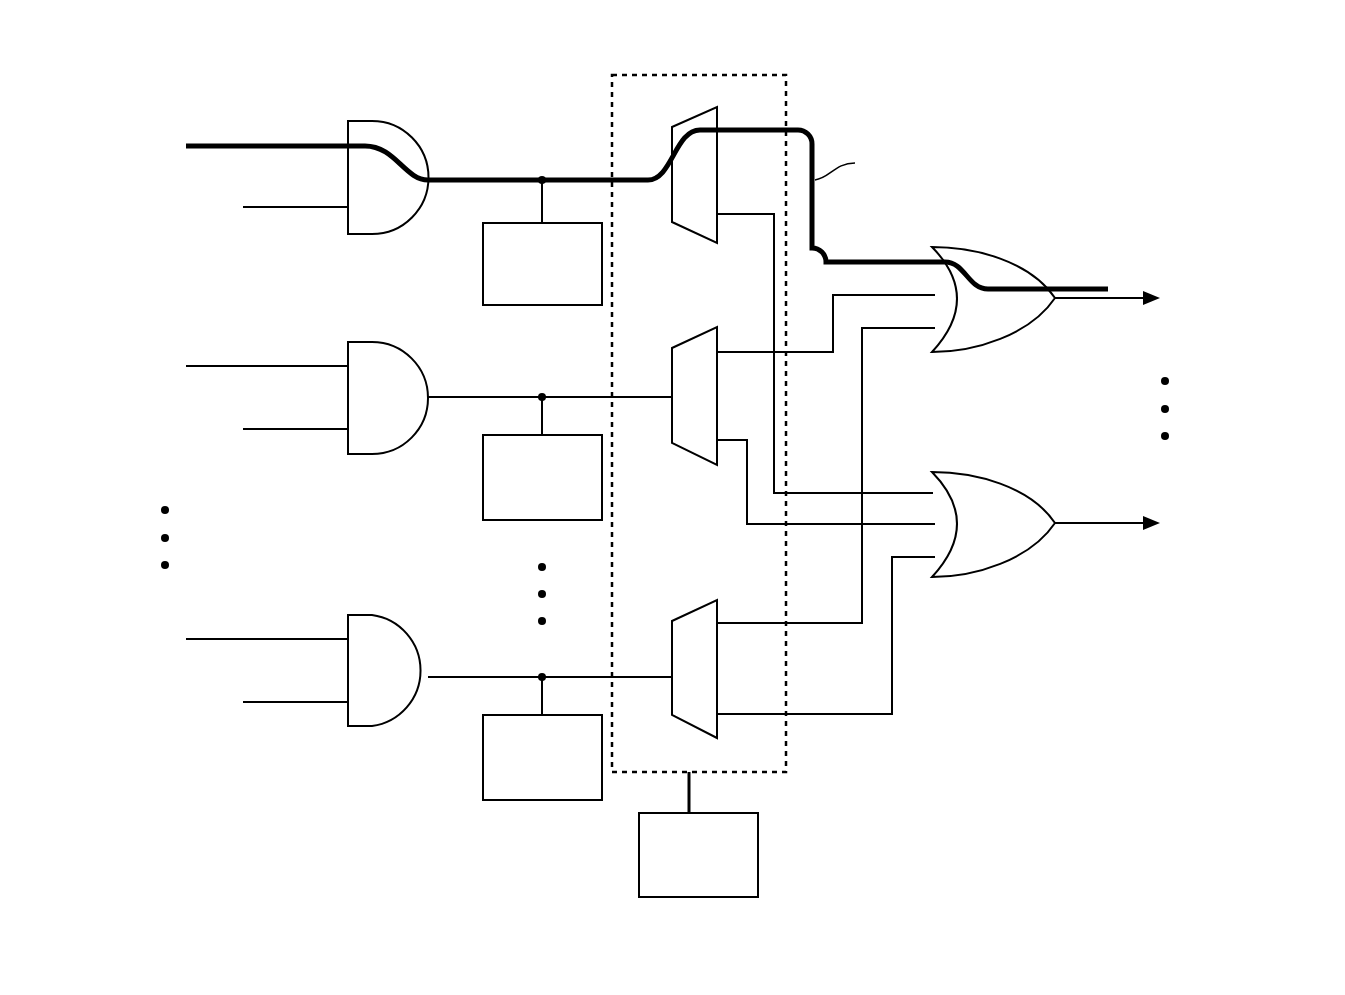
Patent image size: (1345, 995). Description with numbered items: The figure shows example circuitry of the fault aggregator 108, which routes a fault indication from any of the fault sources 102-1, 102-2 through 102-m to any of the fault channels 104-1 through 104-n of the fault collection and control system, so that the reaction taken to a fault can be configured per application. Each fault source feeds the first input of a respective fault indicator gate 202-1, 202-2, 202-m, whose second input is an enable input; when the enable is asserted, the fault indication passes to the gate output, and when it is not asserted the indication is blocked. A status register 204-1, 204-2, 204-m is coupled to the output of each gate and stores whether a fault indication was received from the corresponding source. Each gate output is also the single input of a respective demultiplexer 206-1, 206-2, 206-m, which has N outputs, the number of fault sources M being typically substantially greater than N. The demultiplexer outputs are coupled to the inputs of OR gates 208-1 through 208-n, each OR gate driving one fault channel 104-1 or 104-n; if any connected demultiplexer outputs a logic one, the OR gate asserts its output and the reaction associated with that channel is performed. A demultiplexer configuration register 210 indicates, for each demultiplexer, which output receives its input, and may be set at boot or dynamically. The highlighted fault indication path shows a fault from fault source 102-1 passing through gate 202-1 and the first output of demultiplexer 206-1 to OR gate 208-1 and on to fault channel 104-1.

The fault aggregator 108 is at (1234, 73).
The fault source 102-1 is at (128, 147).
The fault source 102-2 is at (128, 368).
The fault source 102-m is at (128, 640).
The fault indicator gate 202-1 is at (386, 120).
The fault indicator gate 202-2 is at (386, 341).
The fault indicator gate 202-m is at (390, 614).
The status register 204-1 is at (573, 287).
The status register 204-2 is at (573, 500).
The status register 204-m is at (576, 782).
The demultiplexer 206-1 is at (700, 124).
The demultiplexer 206-2 is at (702, 344).
The demultiplexer 206-m is at (704, 612).
The OR gate 208-1 is at (975, 353).
The OR gate 208-n is at (975, 578).
The demultiplexer configuration register 210 is at (698, 834).
The fault channel 104-1 is at (1216, 298).
The fault channel 104-n is at (1215, 523).